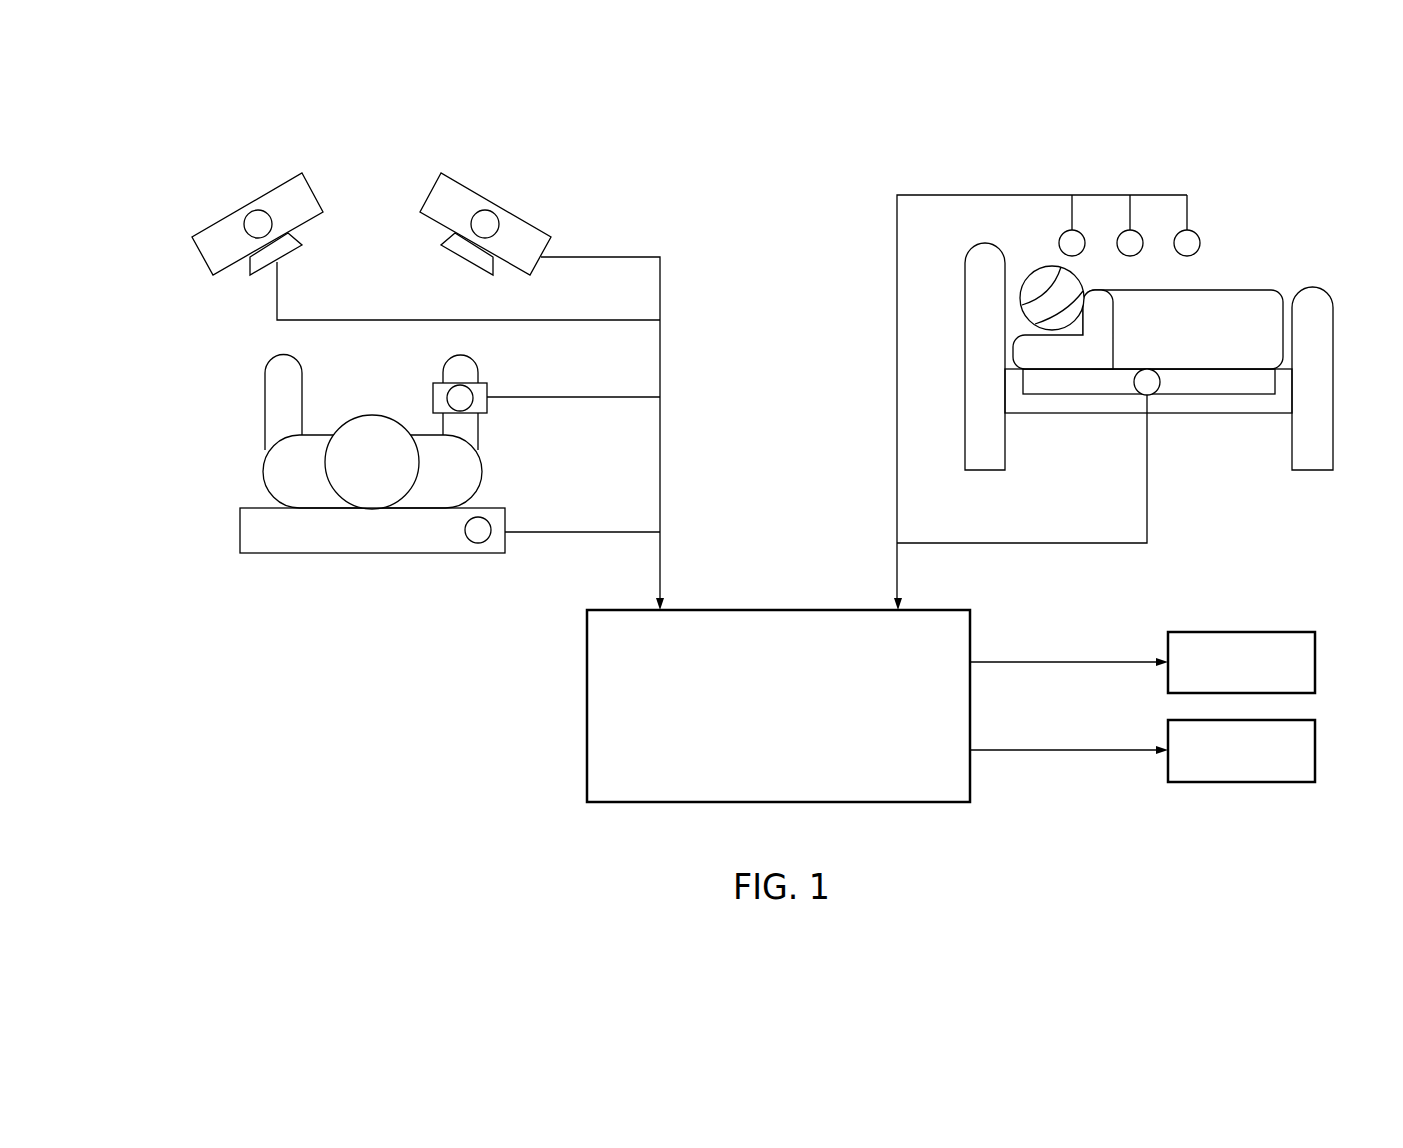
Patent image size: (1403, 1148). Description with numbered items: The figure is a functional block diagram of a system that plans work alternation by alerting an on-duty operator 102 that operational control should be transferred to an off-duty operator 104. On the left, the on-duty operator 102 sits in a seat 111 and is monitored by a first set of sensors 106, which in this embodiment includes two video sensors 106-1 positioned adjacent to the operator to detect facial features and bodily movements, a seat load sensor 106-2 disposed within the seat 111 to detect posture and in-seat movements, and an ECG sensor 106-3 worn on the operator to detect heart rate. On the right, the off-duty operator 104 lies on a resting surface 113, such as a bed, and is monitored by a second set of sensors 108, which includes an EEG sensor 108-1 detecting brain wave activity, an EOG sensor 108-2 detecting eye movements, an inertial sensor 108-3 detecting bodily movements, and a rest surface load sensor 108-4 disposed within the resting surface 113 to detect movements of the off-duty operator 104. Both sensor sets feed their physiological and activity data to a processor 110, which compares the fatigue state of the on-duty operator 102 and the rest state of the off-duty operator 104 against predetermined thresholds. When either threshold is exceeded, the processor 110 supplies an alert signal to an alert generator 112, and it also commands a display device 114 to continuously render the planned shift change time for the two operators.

The on-duty operator 102 is at (265, 420).
The off-duty operator 104 is at (1300, 271).
The first set of sensors 106 is at (590, 201).
The video sensors 106-1 is at (252, 202).
The seat load sensors 106-2 is at (478, 545).
The electrocardiogram (ECG) sensors 106-3 is at (488, 387).
The second set of sensors 108 is at (1229, 173).
The electroencephalogram (EEG) sensors 108-1 is at (1068, 231).
The electrooculogram (EOG) sensors 108-2 is at (1133, 231).
The inertial sensors 108-3 is at (1200, 243).
The rest surface load sensors 108-4 is at (1158, 395).
The processor 110 is at (770, 610).
The on-duty operator's seat 111 is at (240, 533).
The alert generator 112 is at (1317, 663).
The resting surface 113 is at (1272, 383).
The display device 114 is at (1317, 750).